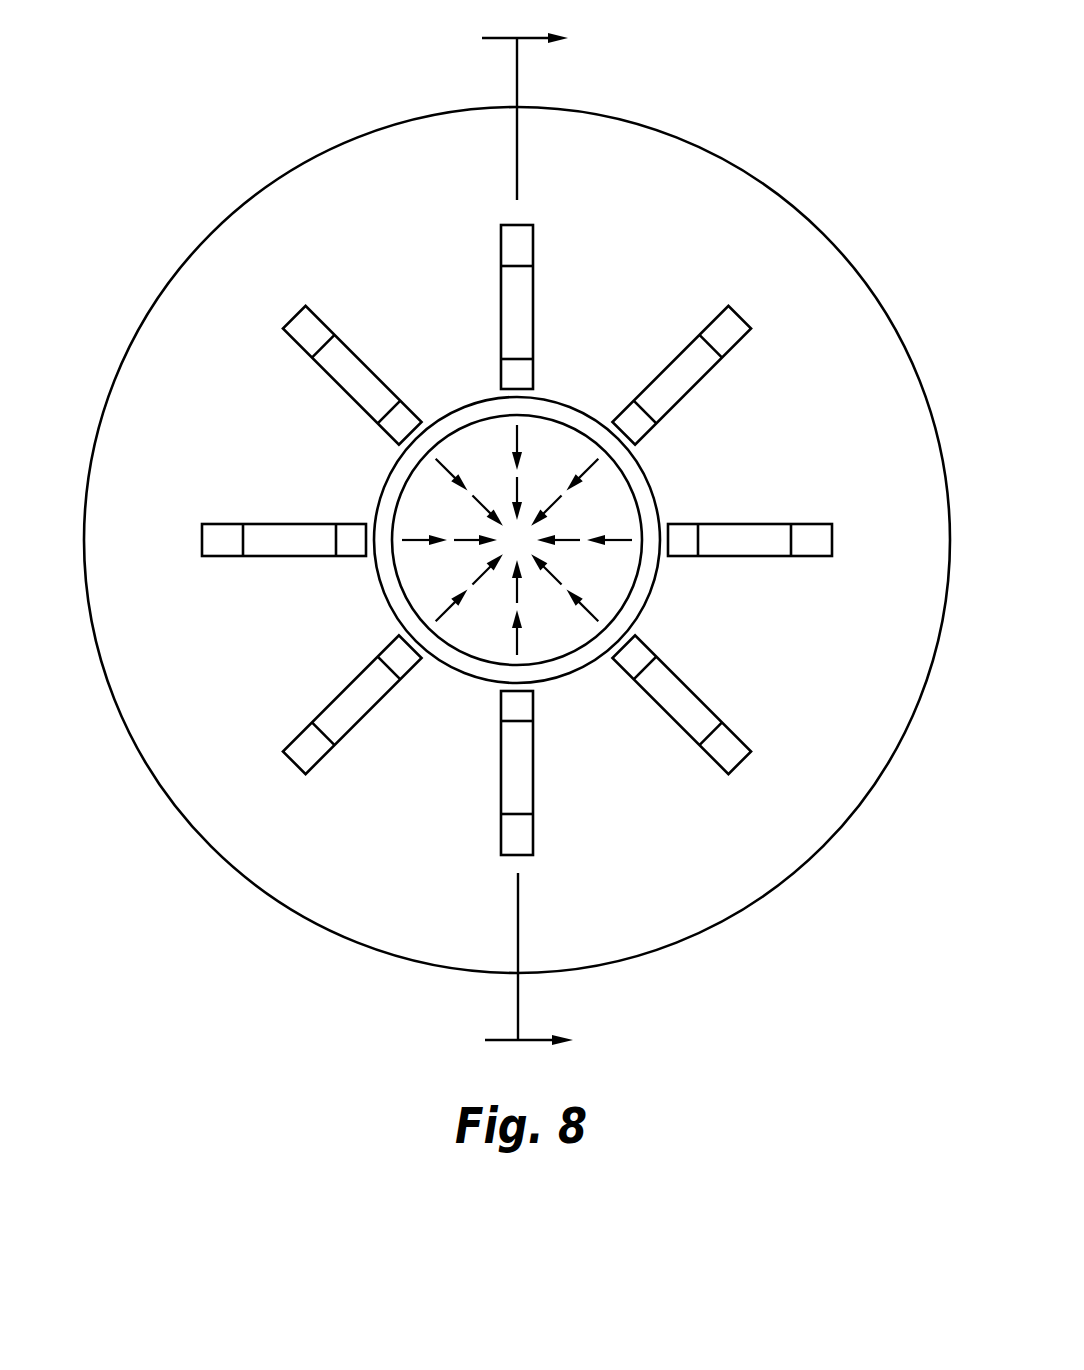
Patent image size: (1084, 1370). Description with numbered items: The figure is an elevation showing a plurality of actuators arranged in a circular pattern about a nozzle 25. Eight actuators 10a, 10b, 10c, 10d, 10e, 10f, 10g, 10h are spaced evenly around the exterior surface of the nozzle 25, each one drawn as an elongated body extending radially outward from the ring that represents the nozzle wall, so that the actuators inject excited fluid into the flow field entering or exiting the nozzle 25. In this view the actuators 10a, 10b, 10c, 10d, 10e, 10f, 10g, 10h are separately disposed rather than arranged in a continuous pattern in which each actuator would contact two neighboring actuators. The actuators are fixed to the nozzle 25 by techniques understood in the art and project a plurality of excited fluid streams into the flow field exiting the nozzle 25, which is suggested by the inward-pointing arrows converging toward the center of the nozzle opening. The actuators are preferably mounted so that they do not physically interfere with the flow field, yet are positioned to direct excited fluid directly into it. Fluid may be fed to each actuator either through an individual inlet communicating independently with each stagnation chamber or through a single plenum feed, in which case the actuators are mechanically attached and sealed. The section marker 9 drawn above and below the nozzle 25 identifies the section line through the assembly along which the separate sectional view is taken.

The nozzle 25 is at (792, 202).
The section line 9- 9 is at (509, 540).
The actuator 10a is at (535, 255).
The actuator 10b is at (727, 350).
The actuator 10c is at (743, 557).
The actuator 10d is at (723, 723).
The actuator 10e is at (535, 822).
The actuator 10f is at (308, 728).
The actuator 10g is at (288, 557).
The actuator 10h is at (308, 355).